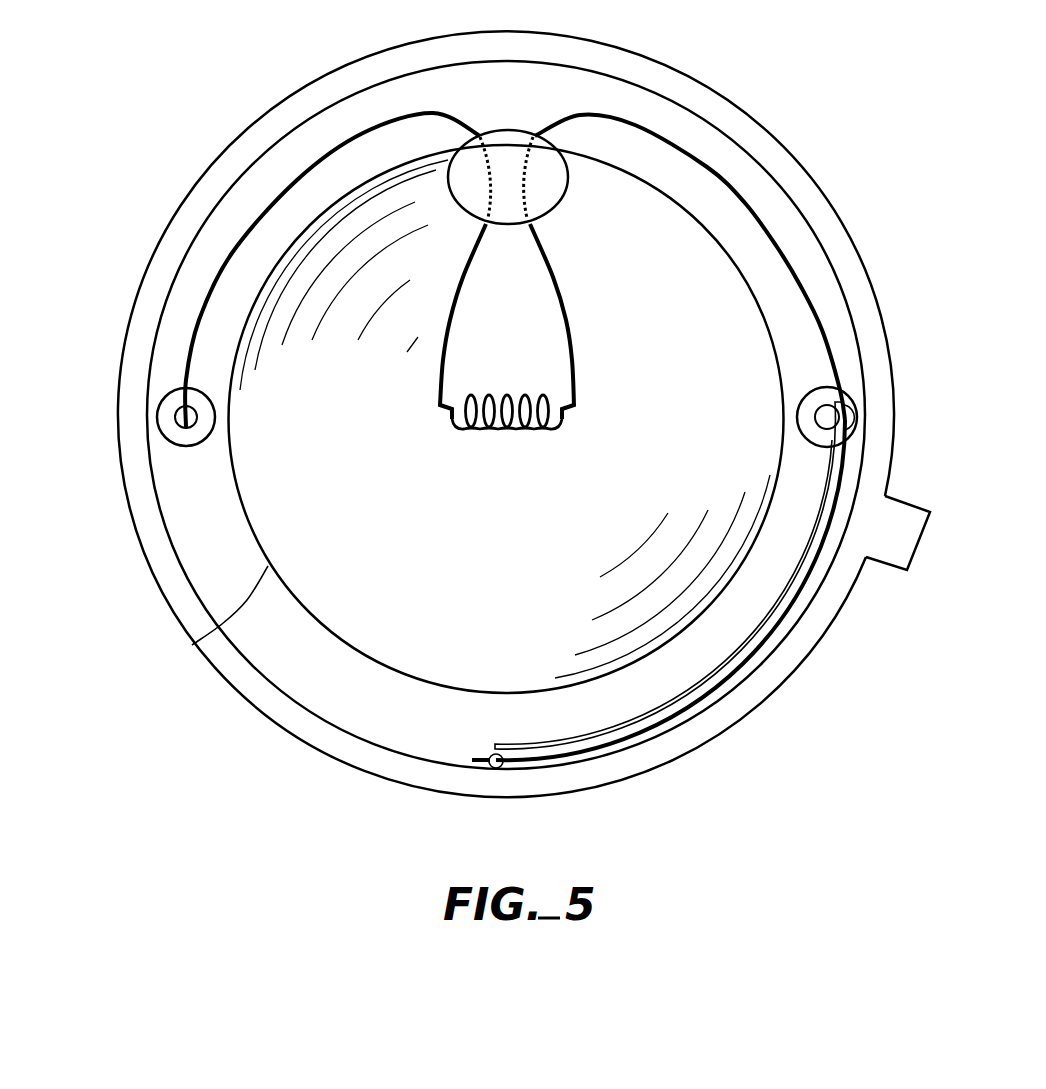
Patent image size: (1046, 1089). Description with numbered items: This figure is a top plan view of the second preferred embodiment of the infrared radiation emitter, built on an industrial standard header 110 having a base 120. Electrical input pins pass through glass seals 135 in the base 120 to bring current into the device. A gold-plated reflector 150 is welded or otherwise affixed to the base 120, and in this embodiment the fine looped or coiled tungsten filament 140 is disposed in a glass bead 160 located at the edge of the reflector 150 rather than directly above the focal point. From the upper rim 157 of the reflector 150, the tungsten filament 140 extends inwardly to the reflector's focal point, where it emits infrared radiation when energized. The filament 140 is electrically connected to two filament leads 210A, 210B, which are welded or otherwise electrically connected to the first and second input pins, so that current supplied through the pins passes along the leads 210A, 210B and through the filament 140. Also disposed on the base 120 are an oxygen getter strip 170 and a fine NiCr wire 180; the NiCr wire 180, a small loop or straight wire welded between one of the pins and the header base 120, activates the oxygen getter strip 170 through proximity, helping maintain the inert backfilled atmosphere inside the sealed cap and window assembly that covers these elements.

The header 110 is at (153, 244).
The base 120 is at (260, 147).
The glass seals 135 is at (180, 443).
The tungsten filament 140 is at (500, 450).
The reflector 150 is at (335, 648).
The upper rim 157 is at (195, 645).
The glass bead 160 is at (578, 174).
The oxygen getter strip 170 is at (828, 502).
The NiCr wire 180 is at (803, 622).
The filament lead 210A is at (387, 123).
The filament lead 210B is at (779, 246).